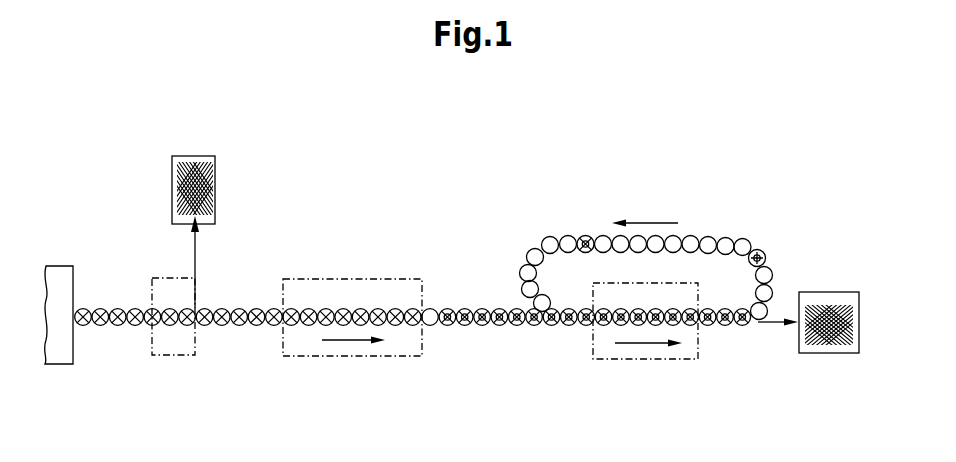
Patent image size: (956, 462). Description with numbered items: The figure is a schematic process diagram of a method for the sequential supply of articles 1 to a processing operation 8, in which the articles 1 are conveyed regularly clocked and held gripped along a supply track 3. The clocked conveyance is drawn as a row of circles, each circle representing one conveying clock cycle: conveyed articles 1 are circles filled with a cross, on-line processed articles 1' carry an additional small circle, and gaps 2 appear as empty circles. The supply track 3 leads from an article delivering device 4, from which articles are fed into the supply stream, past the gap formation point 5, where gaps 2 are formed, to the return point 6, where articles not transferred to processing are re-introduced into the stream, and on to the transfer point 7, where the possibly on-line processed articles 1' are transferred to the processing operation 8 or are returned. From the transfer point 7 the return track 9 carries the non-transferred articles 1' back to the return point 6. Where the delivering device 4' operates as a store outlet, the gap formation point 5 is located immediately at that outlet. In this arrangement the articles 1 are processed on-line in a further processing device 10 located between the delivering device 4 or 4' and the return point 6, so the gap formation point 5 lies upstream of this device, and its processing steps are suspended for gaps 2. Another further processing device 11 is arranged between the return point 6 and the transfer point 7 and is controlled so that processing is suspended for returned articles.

The articles 1 is at (217, 185).
The on-line processed articles 1' is at (638, 353).
The gaps 2 is at (253, 322).
The supply track 3 is at (432, 303).
The article delivering device 4 is at (71, 274).
The delivering device operating as store outlet 4' is at (156, 345).
The gap formation point 5 is at (191, 302).
The return point 6 is at (540, 333).
The transfer point 7 is at (755, 334).
The processing operation 8 is at (828, 276).
The return track 9 is at (599, 220).
The further processing device 10 is at (315, 352).
The further processing device 11 is at (638, 352).